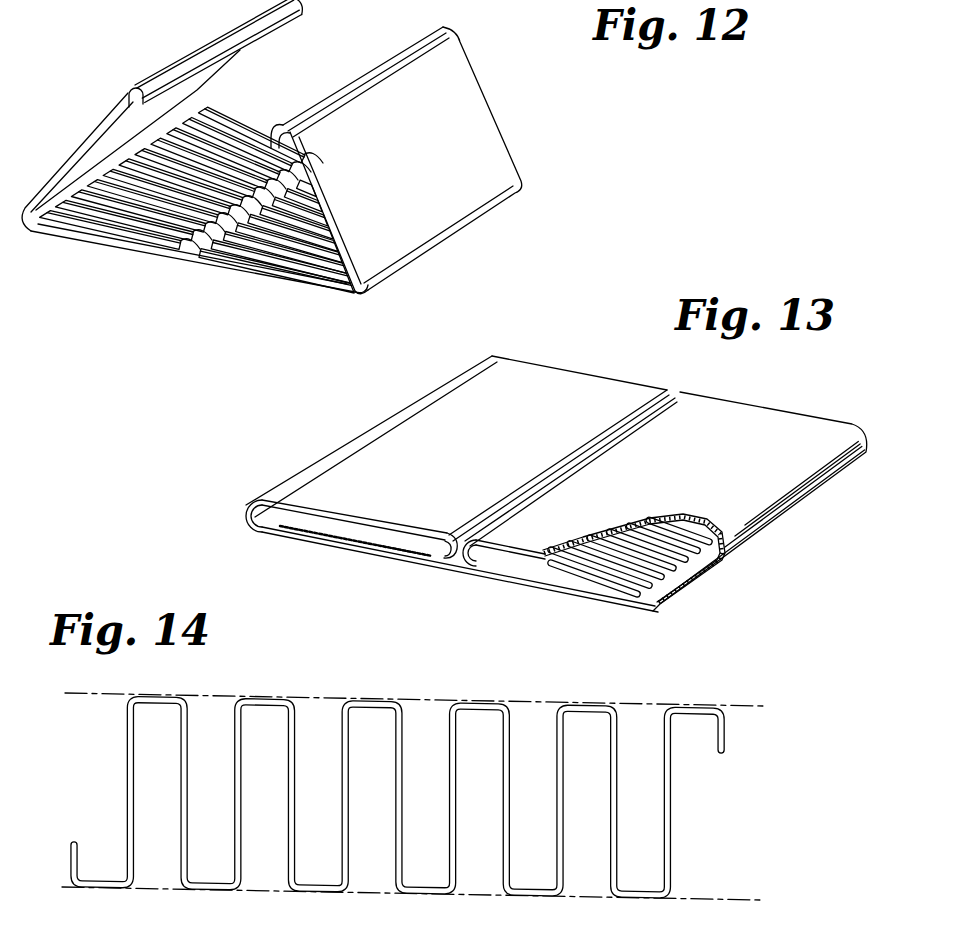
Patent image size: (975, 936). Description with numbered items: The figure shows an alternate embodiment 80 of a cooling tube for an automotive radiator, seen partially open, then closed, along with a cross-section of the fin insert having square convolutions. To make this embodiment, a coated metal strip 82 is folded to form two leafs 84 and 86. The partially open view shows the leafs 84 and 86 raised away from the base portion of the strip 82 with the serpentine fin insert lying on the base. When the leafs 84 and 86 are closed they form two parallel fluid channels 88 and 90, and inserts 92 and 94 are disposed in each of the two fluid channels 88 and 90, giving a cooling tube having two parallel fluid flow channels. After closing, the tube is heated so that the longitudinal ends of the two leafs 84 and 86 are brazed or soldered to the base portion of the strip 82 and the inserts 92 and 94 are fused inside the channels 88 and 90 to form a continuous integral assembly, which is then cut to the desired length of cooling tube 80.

In FIG. 12, the alternate embodiment of the cooling tube 80 is at (218, 286).
In FIG. 12, the coated metal strip 82 is at (100, 250).
In FIG. 13, the coated metal strip 82 is at (385, 560).
In FIG. 12, the leaf 84 is at (100, 116).
In FIG. 13, the leaf 84 is at (453, 455).
In FIG. 12, the leaf 86 is at (493, 113).
In FIG. 13, the leaf 86 is at (673, 479).
In FIG. 13, the fluid channel 88 is at (252, 522).
In FIG. 13, the fluid channel 90 is at (478, 556).
In FIG. 13, the insert 92 is at (325, 530).
In FIG. 13, the insert 94 is at (573, 580).